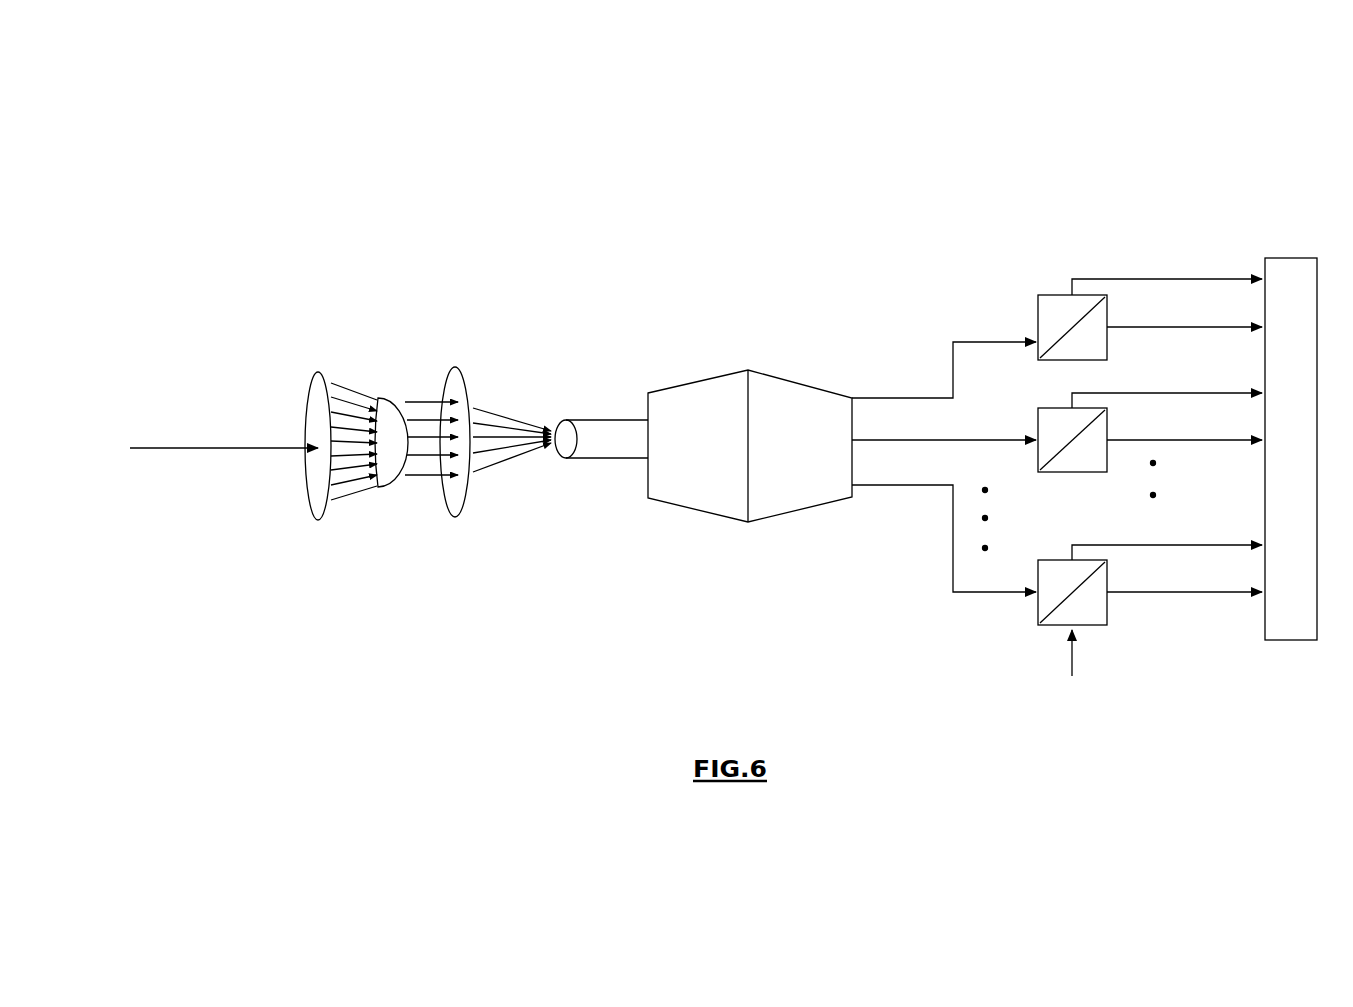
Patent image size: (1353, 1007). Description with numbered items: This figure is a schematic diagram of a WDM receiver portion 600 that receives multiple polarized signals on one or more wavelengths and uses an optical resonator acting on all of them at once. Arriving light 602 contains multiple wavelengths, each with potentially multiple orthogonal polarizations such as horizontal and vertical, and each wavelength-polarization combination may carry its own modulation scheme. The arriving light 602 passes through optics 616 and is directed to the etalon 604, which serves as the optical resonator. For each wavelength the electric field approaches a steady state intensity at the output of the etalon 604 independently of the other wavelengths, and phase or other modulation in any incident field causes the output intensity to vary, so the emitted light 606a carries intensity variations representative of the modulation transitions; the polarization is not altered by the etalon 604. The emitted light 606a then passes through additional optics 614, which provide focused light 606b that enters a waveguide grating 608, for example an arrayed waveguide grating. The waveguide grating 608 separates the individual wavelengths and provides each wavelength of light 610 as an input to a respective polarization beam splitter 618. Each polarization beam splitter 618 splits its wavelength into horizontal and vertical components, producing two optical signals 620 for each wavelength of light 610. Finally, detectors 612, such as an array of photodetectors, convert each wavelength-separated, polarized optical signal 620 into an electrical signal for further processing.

The WDM receiver portion 600 is at (426, 176).
The arriving light 602 is at (201, 510).
The etalon 604 is at (392, 498).
The emitted light 606a is at (418, 393).
The focused light 606b is at (531, 484).
The waveguide grating 608 is at (725, 372).
The wavelength of light 610 is at (908, 512).
The detectors 612 is at (1292, 258).
The additional optics 614 is at (466, 530).
The optics 616 is at (313, 536).
The polarization beam splitter 618 is at (1100, 633).
The optical signals 620 is at (1219, 612).